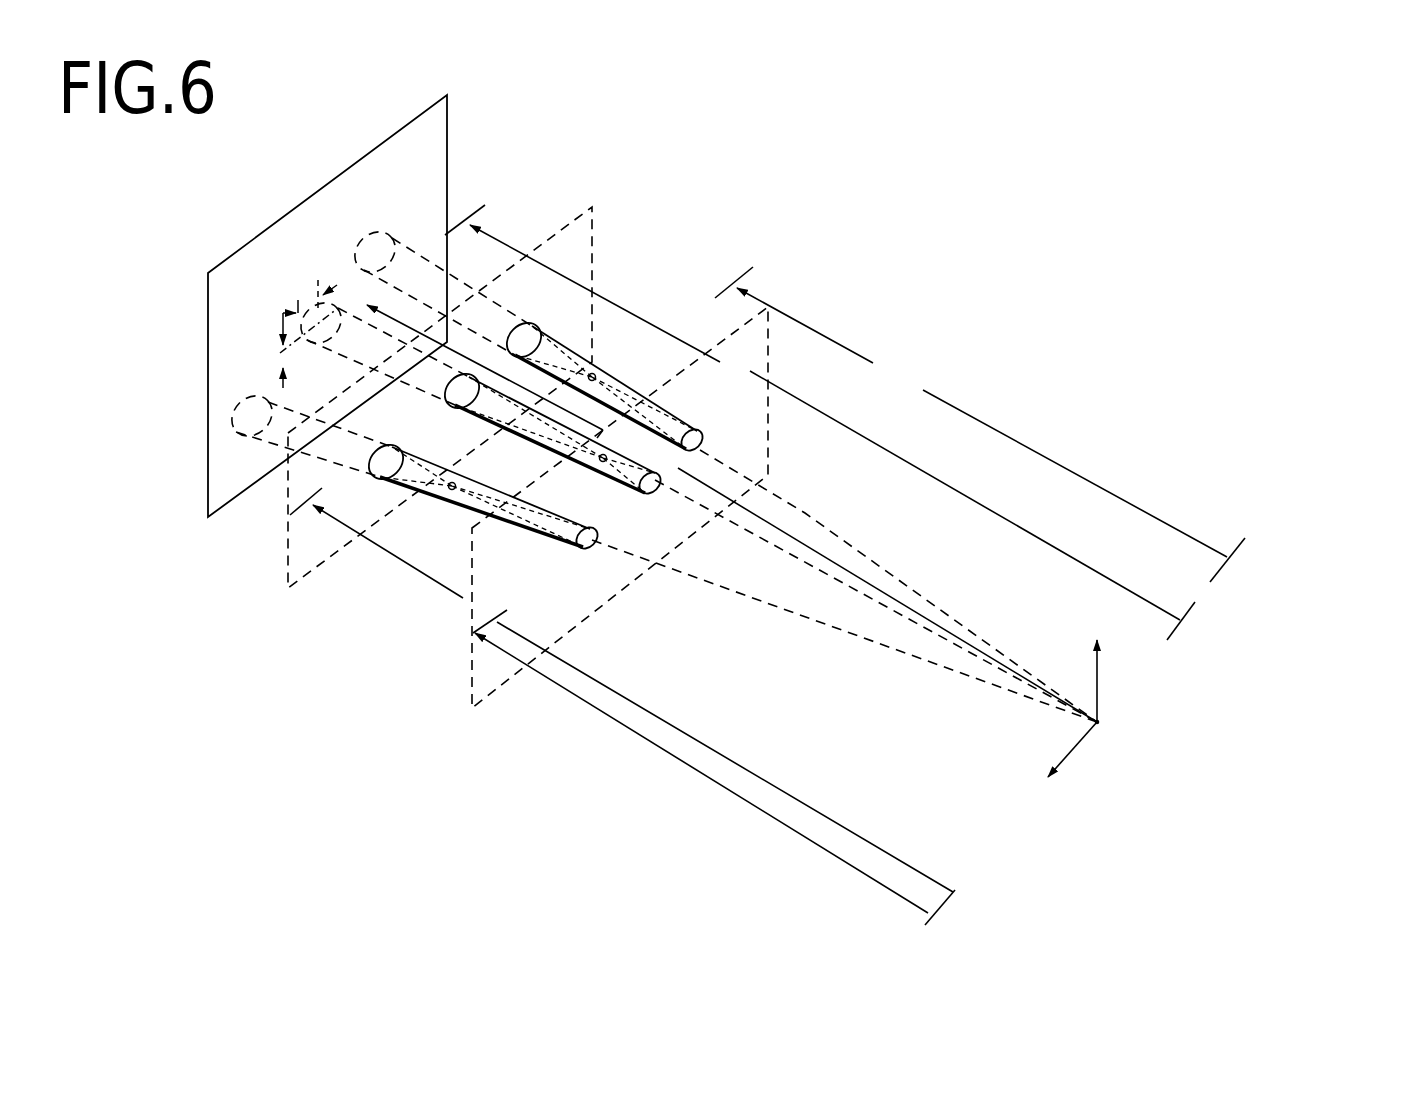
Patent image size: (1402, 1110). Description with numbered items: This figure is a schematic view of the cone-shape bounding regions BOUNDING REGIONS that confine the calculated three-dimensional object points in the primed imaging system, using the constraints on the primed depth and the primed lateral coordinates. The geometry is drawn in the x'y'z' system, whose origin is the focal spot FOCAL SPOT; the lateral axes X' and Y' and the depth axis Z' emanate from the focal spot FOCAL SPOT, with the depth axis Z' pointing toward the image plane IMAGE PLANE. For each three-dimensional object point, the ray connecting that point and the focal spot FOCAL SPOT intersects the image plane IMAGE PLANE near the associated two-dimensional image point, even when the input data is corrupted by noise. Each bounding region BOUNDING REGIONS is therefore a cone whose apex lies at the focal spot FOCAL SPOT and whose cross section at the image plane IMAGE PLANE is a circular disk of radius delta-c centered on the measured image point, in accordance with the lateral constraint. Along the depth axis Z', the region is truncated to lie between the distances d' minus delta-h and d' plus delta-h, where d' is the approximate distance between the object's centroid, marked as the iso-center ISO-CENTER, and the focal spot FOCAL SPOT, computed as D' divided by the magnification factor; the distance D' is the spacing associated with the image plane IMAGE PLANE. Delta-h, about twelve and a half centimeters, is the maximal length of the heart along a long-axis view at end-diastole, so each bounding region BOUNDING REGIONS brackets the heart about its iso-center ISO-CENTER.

The image plane IMAGE PLANE is at (327, 306).
The bounding regions BOUNDING REGIONS is at (676, 457).
The iso-center ISO-CENTER is at (580, 409).
The focal spot FOCAL SPOT is at (1211, 703).
The x' axis X' is at (1058, 752).
The y' axis Y' is at (1089, 672).
The z' axis Z' is at (898, 586).
The distance D' is at (582, 283).
The distance d' is at (980, 424).